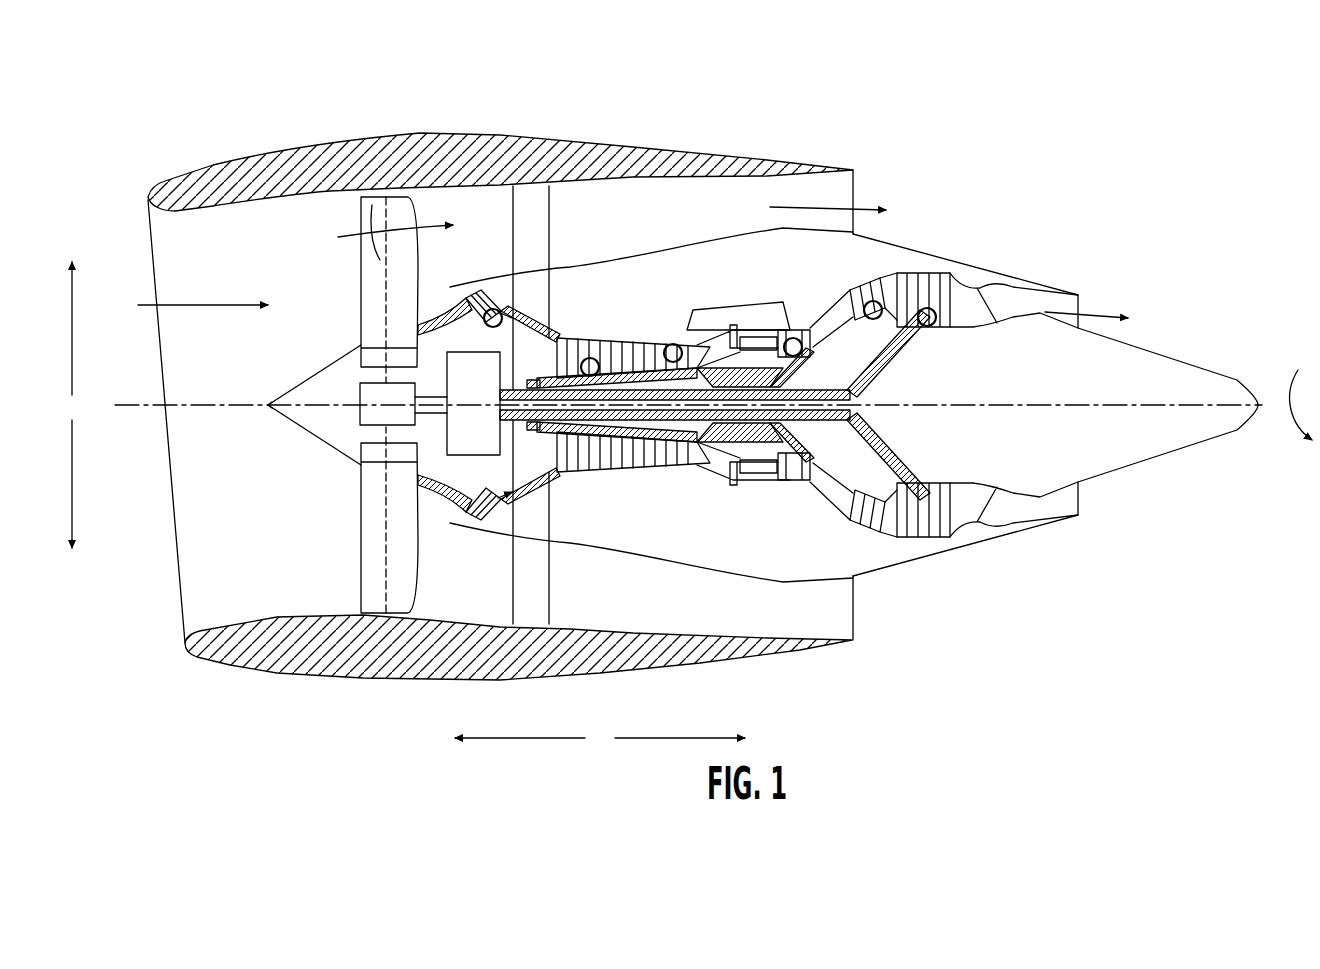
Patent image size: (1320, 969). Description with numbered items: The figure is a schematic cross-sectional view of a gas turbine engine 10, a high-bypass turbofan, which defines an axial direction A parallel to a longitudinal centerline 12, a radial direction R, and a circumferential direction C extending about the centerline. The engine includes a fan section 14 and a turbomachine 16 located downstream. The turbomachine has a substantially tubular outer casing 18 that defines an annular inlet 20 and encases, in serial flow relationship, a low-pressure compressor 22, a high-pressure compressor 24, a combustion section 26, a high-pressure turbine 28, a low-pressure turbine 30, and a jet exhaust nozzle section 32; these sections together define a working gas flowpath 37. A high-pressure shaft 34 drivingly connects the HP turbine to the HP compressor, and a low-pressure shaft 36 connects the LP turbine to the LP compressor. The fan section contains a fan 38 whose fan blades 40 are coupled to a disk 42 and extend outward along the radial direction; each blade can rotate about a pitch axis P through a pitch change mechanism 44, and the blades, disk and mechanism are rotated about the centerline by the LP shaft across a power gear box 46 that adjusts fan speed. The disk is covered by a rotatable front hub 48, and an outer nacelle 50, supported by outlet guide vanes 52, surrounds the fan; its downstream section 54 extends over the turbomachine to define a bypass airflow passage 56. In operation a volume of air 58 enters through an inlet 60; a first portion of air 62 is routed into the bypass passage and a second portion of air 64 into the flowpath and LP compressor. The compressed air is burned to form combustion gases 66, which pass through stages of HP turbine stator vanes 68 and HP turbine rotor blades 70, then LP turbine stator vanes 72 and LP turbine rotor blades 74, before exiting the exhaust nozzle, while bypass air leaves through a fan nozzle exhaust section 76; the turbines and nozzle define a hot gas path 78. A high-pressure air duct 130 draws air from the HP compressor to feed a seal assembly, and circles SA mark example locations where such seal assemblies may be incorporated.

The gas turbine engine 10 is at (995, 150).
The longitudinal centerline 12 is at (1018, 402).
The fan section 14 is at (320, 222).
The turbomachine 16 is at (660, 242).
The outer casing 18 is at (707, 572).
The annular inlet 20 is at (452, 525).
The low-pressure compressor 22 is at (517, 470).
The high-pressure compressor 24 is at (580, 460).
The combustion section 26 is at (757, 468).
The high-pressure turbine 28 is at (845, 492).
The low-pressure turbine 30 is at (937, 534).
The jet exhaust nozzle section 32 is at (995, 515).
The high-pressure shaft 34 is at (760, 378).
The low-pressure shaft 36 is at (880, 368).
The working gas flowpath 37 is at (532, 478).
The fan 38 is at (325, 460).
The fan blades 40 is at (360, 555).
The disk 42 is at (380, 358).
The pitch change mechanism 44 is at (357, 387).
The power gear box 46 is at (483, 372).
The front hub 48 is at (283, 422).
The outer nacelle 50 is at (407, 680).
The outlet guide vanes 52 is at (550, 218).
The downstream section of the nacelle 54 is at (775, 160).
The bypass airflow passage 56 is at (703, 221).
The volume of air 58 is at (200, 302).
The inlet 60 is at (178, 617).
The first portion of air 62 is at (361, 260).
The second portion of air 64 is at (440, 298).
The combustion gases 66 is at (893, 277).
The HP turbine stator vanes 68 is at (768, 475).
The HP turbine rotor blades 70 is at (850, 432).
The LP turbine stator vanes 72 is at (858, 502).
The LP turbine rotor blades 74 is at (867, 520).
The fan nozzle exhaust section 76 is at (848, 188).
The hot gas path 78 is at (840, 310).
The high-pressure air duct 130 is at (733, 303).
The circles SA is at (510, 310).
The pitch axis P is at (400, 210).
The radial direction R is at (72, 405).
The axial direction A is at (600, 738).
The circumferential direction C is at (1301, 424).